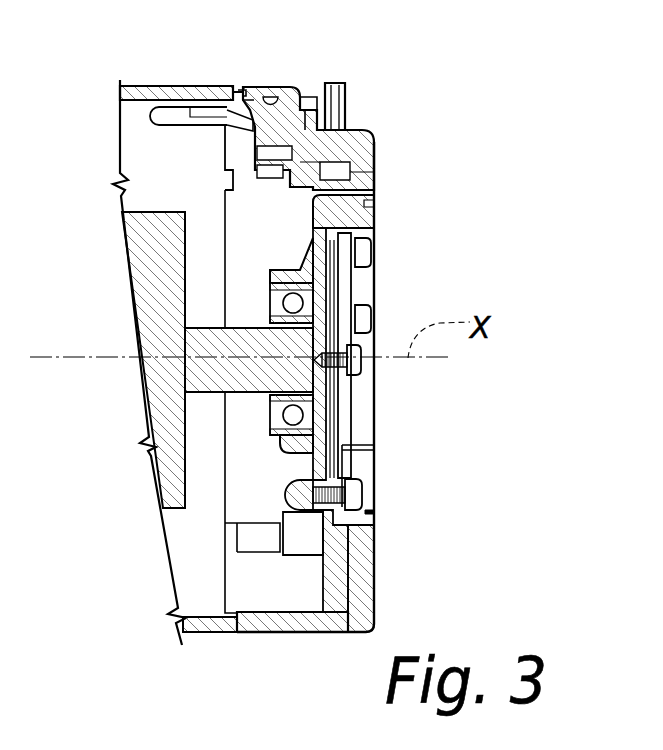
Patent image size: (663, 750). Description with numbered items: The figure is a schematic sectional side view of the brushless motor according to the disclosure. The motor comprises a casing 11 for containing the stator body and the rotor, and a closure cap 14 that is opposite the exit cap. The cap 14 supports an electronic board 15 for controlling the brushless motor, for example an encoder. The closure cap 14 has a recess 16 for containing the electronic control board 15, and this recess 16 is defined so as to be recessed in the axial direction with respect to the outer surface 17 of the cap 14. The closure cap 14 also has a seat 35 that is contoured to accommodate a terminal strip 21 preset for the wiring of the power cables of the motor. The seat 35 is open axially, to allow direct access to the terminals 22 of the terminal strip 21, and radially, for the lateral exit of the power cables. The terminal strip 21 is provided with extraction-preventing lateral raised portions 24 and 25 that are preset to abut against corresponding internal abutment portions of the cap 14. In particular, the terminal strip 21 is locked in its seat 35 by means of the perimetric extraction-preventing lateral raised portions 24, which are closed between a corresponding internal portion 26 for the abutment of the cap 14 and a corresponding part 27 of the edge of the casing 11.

The casing 11 is at (175, 628).
The closure cap 14 is at (285, 631).
The electronic board 15 is at (353, 300).
The recess 16 is at (360, 463).
The outer surface 17 is at (377, 552).
The terminal strip 21 is at (226, 149).
The terminals 22 is at (352, 100).
The extraction-preventing lateral raised portions 24 is at (243, 88).
The extraction-preventing lateral raised portions 25 is at (305, 218).
The internal portion 26 is at (250, 95).
The part of the edge of the casing 27 is at (150, 92).
The seat 35 is at (283, 102).